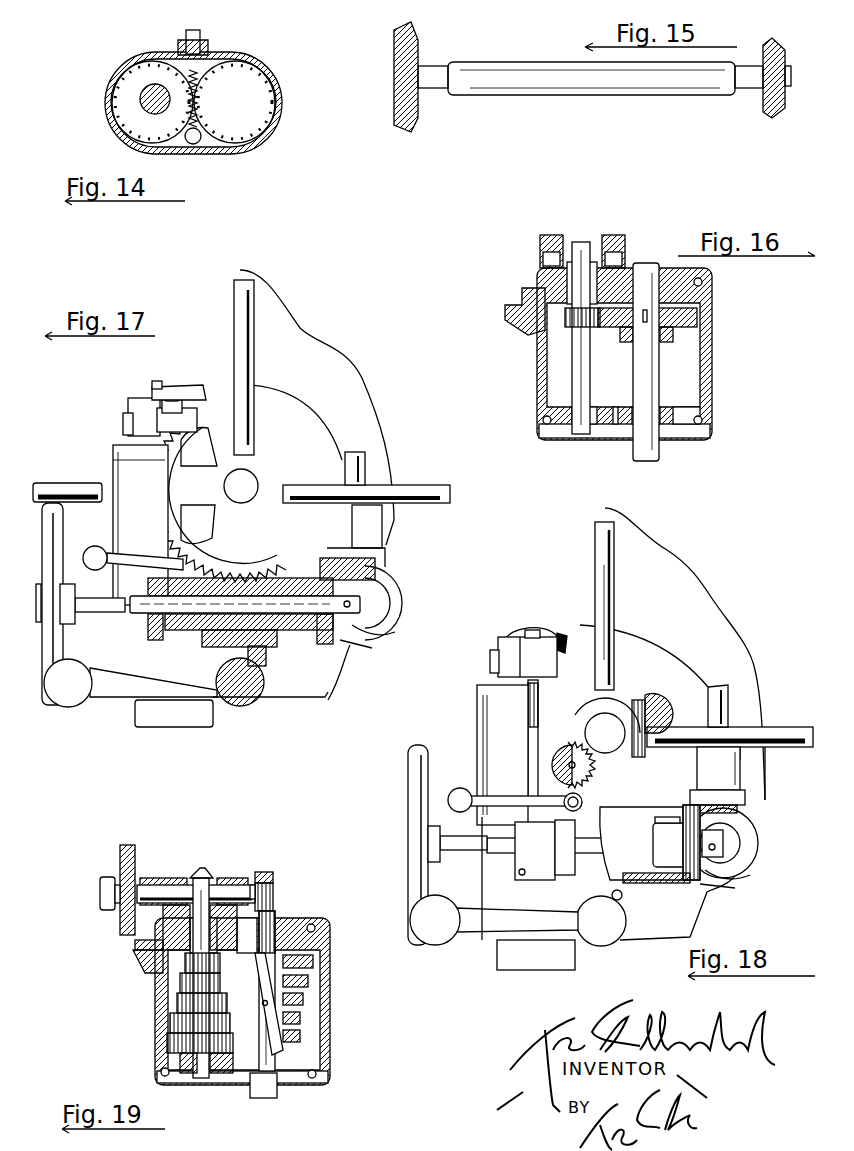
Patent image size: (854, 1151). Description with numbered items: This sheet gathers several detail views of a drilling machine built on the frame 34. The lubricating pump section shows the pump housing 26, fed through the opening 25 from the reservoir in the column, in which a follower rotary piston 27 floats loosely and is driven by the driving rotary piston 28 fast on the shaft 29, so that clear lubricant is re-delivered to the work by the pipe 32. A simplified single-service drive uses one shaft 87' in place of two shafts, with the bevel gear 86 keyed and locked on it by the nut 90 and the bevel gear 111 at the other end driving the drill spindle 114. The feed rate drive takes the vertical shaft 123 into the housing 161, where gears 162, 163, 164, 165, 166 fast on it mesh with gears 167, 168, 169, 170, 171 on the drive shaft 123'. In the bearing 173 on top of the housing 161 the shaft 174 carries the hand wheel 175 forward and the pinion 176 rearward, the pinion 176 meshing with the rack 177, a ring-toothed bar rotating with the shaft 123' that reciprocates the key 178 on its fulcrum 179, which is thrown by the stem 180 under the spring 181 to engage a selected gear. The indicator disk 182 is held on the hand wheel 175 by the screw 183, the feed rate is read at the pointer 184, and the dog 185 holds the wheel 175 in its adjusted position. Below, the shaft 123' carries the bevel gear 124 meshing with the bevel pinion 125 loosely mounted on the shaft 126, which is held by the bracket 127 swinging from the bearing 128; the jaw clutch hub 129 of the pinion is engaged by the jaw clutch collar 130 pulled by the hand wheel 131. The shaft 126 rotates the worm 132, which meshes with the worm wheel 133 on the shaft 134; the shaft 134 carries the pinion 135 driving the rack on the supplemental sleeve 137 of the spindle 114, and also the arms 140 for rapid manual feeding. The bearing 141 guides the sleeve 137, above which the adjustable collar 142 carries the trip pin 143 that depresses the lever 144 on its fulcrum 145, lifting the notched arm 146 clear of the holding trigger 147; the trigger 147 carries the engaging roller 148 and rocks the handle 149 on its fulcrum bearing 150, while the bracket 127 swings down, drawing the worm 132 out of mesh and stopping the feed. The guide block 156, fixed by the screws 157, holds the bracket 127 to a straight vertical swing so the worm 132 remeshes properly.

In FIG. 14, the opening 25 is at (197, 145).
In FIG. 14, the pump housing 26 is at (266, 128).
In FIG. 14, the follower rotary piston 27 is at (268, 102).
In FIG. 14, the driving rotary piston 28 is at (111, 103).
In FIG. 14, the shaft 29 is at (148, 108).
In FIG. 14, the pipe 32 is at (202, 36).
In FIG. 17, the frame 34 is at (362, 380).
In FIG. 18, the frame 34 is at (680, 578).
In FIG. 15, the bevel gear 86 is at (778, 108).
In FIG. 15, the single shaft 87' is at (590, 66).
In FIG. 15, the nut 90 is at (790, 66).
In FIG. 15, the bevel gear 111 is at (400, 130).
In FIG. 17, the drill spindle 114 is at (153, 388).
In FIG. 18, the drill spindle 114 is at (514, 630).
In FIG. 16, the vertical shaft 123 is at (609, 317).
In FIG. 19, the vertical shaft 123 is at (229, 956).
In FIG. 16, the drive shaft 123' is at (679, 367).
In FIG. 17, the drive shaft 123' is at (391, 452).
In FIG. 18, the drive shaft 123' is at (764, 698).
In FIG. 19, the drive shaft 123' is at (291, 1097).
In FIG. 17, the bevel gear 124 is at (386, 570).
In FIG. 18, the bevel gear 124 is at (752, 808).
In FIG. 17, the bevel pinion 125 is at (342, 655).
In FIG. 18, the bevel pinion 125 is at (705, 882).
In FIG. 17, the shaft 126 is at (98, 613).
In FIG. 18, the shaft 126 is at (440, 830).
In FIG. 17, the bracket 127 is at (296, 640).
In FIG. 18, the bracket 127 is at (653, 884).
In FIG. 17, the bearing 128 is at (396, 633).
In FIG. 18, the bearing 128 is at (757, 868).
In FIG. 17, the jaw clutch hub 129 is at (355, 642).
In FIG. 18, the jaw clutch hub 129 is at (740, 884).
In FIG. 17, the jaw clutch collar 130 is at (370, 620).
In FIG. 18, the jaw clutch collar 130 is at (750, 866).
In FIG. 17, the hand wheel 131 is at (45, 707).
In FIG. 18, the hand wheel 131 is at (405, 770).
In FIG. 17, the worm 132 is at (330, 568).
In FIG. 17, the worm wheel 133 is at (125, 465).
In FIG. 18, the worm wheel 133 is at (560, 636).
In FIG. 17, the shaft 134 is at (260, 478).
In FIG. 18, the shaft 134 is at (627, 704).
In FIG. 18, the pinion 135 is at (609, 741).
In FIG. 18, the supplemental sleeve 137 is at (553, 760).
In FIG. 17, the arms 140 is at (233, 305).
In FIG. 18, the arms 140 is at (614, 588).
In FIG. 17, the bearing 141 is at (123, 440).
In FIG. 18, the bearing 141 is at (479, 710).
In FIG. 17, the adjustable collar 142 is at (130, 410).
In FIG. 18, the adjustable collar 142 is at (490, 662).
In FIG. 17, the trip pin 143 is at (175, 398).
In FIG. 18, the trip pin 143 is at (530, 690).
In FIG. 17, the lever 144 is at (135, 550).
In FIG. 18, the lever 144 is at (485, 795).
In FIG. 18, the fulcrum 145 is at (563, 797).
In FIG. 18, the notched arm 146 is at (690, 805).
In FIG. 18, the holding trigger 147 is at (603, 838).
In FIG. 17, the engaging roller 148 is at (268, 662).
In FIG. 18, the engaging roller 148 is at (625, 903).
In FIG. 17, the handle 149 is at (100, 700).
In FIG. 18, the handle 149 is at (447, 945).
In FIG. 17, the fulcrum bearing 150 is at (250, 705).
In FIG. 18, the fulcrum bearing 150 is at (612, 945).
In FIG. 17, the guide block 156 is at (160, 620).
In FIG. 18, the guide block 156 is at (560, 880).
In FIG. 17, the screws 157 is at (195, 645).
In FIG. 18, the screws 157 is at (520, 876).
In FIG. 16, the housing 161 is at (712, 353).
In FIG. 19, the housing 161 is at (328, 1040).
In FIG. 16, the gear 162 is at (567, 323).
In FIG. 19, the gear 162 is at (185, 966).
In FIG. 19, the gear 163 is at (180, 985).
In FIG. 19, the gear 164 is at (177, 1005).
In FIG. 19, the gear 165 is at (170, 1025).
In FIG. 19, the gear 166 is at (167, 1045).
In FIG. 16, the gear 167 is at (699, 318).
In FIG. 19, the gear 167 is at (313, 965).
In FIG. 19, the gear 168 is at (308, 981).
In FIG. 19, the gear 169 is at (303, 999).
In FIG. 19, the gear 170 is at (300, 1018).
In FIG. 19, the gear 171 is at (300, 1036).
In FIG. 16, the bearing 173 is at (627, 240).
In FIG. 19, the bearing 173 is at (168, 880).
In FIG. 19, the shaft 174 is at (272, 878).
In FIG. 19, the hand wheel 175 is at (135, 862).
In FIG. 19, the pinion 176 is at (274, 905).
In FIG. 19, the rack 177 is at (274, 888).
In FIG. 19, the key 178 is at (250, 1080).
In FIG. 19, the fulcrum 179 is at (205, 1080).
In FIG. 19, the stem 180 is at (286, 1000).
In FIG. 19, the spring 181 is at (270, 960).
In FIG. 19, the indicator disk 182 is at (120, 860).
In FIG. 19, the screw 183 is at (108, 905).
In FIG. 19, the pointer 184 is at (135, 962).
In FIG. 19, the dog 185 is at (135, 948).